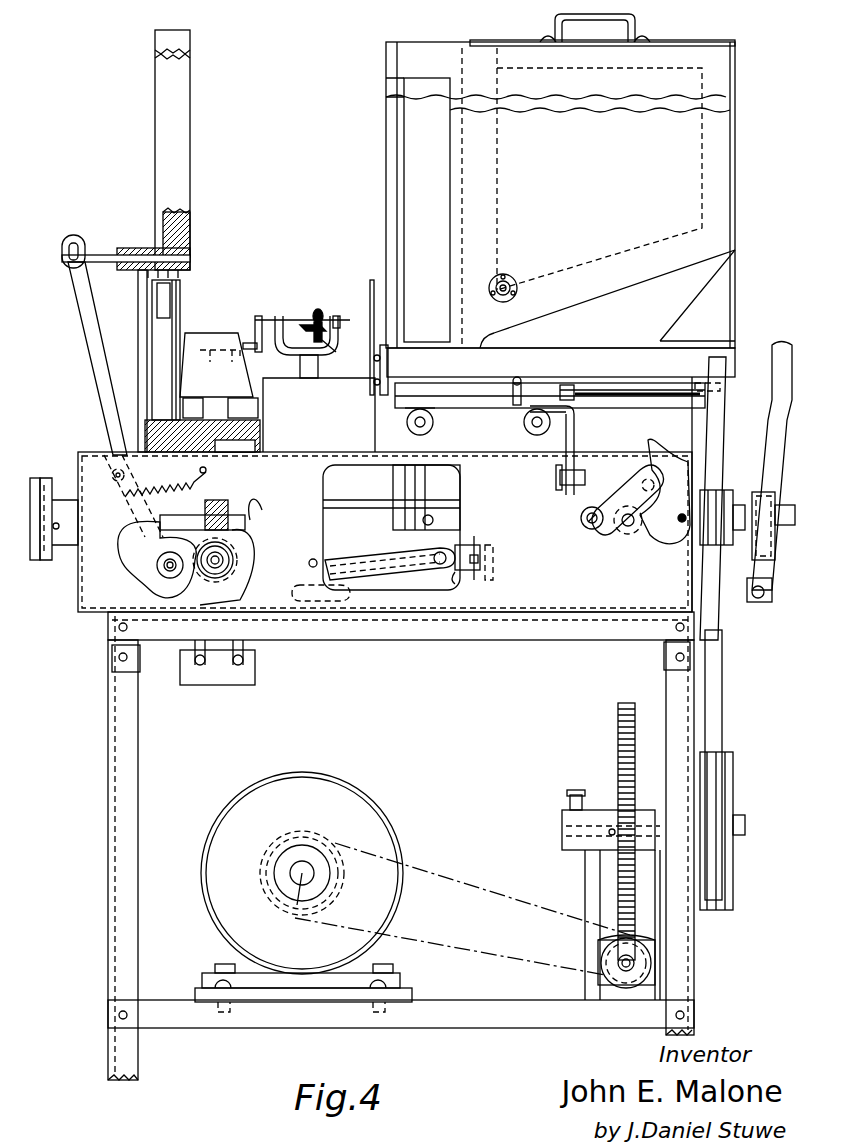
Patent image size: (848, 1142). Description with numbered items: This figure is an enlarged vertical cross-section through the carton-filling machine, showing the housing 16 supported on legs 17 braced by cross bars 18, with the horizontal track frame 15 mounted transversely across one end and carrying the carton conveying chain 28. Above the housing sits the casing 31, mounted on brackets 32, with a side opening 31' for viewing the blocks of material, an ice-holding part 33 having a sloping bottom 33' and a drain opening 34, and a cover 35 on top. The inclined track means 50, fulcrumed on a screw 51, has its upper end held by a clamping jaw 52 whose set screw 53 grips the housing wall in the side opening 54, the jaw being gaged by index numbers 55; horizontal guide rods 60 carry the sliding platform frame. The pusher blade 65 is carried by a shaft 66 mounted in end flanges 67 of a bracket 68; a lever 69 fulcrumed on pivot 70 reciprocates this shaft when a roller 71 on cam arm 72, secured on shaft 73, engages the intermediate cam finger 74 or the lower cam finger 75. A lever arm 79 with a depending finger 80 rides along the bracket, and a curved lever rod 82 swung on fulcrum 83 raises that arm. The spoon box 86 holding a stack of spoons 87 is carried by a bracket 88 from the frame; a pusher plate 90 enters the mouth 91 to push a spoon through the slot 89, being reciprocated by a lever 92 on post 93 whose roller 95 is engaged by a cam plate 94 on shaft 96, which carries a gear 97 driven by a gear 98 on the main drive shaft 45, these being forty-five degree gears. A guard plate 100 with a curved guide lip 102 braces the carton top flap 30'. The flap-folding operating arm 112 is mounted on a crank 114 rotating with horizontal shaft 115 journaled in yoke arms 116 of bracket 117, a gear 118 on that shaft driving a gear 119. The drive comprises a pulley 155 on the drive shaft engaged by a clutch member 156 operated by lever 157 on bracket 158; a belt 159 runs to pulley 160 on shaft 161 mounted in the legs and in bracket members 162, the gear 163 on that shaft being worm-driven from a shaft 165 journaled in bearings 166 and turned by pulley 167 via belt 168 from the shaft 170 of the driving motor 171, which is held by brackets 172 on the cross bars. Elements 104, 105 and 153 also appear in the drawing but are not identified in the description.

The horizontal frame 15 is at (262, 444).
The housing 16 is at (385, 532).
The legs 17 is at (666, 678).
The cross bars 18 is at (435, 1028).
The carton conveying chain 28 is at (213, 415).
The top flap 30' is at (196, 350).
The casing 31 is at (424, 195).
The side opening 31' is at (427, 210).
The brackets 32 is at (735, 322).
The part of the casing 33 is at (573, 195).
The sloping bottom 33' is at (599, 188).
The drain opening 34 is at (503, 298).
The cover 35 is at (735, 42).
The main drive shaft 45 is at (185, 512).
The inclined track means 50 is at (368, 560).
The screw 51 is at (313, 558).
The clamping jaw 52 is at (468, 545).
The set screw 53 is at (478, 550).
The side opening 54 is at (452, 583).
The index numbers 55 is at (494, 562).
The horizontal guide rods 60 is at (368, 500).
The blade portion 65 is at (370, 284).
The shaft 66 is at (662, 395).
The end flanges 67 is at (575, 398).
The bracket 68 is at (484, 412).
The lever 69 is at (716, 408).
The pivot 70 is at (682, 524).
The roller 71 is at (640, 480).
The cam arm 72 is at (628, 490).
The shaft 73 is at (626, 528).
The intermediate cam finger 74 is at (648, 458).
The lower cam finger 75 is at (650, 535).
The lever arm 79 is at (512, 410).
The depending finger 80 is at (524, 418).
The curved lever rod 82 is at (567, 444).
The fulcrum 83 is at (558, 477).
The spoon box 86 is at (160, 152).
The stack of spoons 87 is at (168, 232).
The bracket 88 is at (138, 334).
The slot 89 is at (192, 258).
The pusher plate 90 is at (88, 255).
The mouth 91 is at (143, 250).
The lever 92 is at (97, 378).
The post 93 is at (112, 482).
The cam plate 94 is at (225, 590).
The roller 95 is at (166, 572).
The shaft 96 is at (234, 558).
The gear 97 is at (232, 548).
The gear 98 is at (220, 504).
The guard plate 100 is at (168, 360).
The curved guide lip 102 is at (160, 318).
The bracket 104 is at (58, 500).
The plate 105 is at (48, 528).
The operating arm 112 is at (245, 343).
The crank 114 is at (257, 316).
The horizontal shaft 115 is at (286, 320).
The yoke arms 116 is at (336, 316).
The bracket 117 is at (300, 362).
The gear 118 is at (318, 308).
The gear 119 is at (330, 346).
The shaft 153 is at (740, 505).
The pulley 155 is at (722, 490).
The clutch member 156 is at (764, 492).
The lever 157 is at (776, 428).
The bracket 158 is at (752, 596).
The belt 159 is at (722, 698).
The pulley 160 is at (733, 790).
The shaft 161 is at (746, 826).
The bracket members 162 is at (588, 878).
The gear 163 is at (618, 765).
The shaft 165 is at (624, 968).
The bearings 166 is at (605, 975).
The pulley 167 is at (605, 942).
The belt 168 is at (488, 907).
The shaft 170 is at (300, 890).
The driving motor 171 is at (208, 870).
The brackets 172 is at (205, 978).